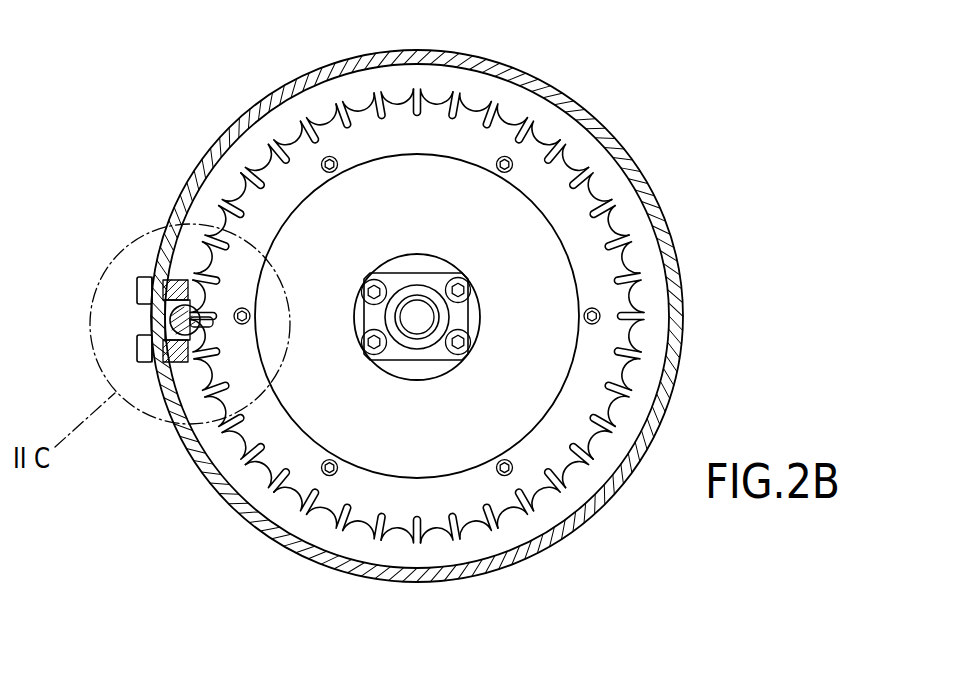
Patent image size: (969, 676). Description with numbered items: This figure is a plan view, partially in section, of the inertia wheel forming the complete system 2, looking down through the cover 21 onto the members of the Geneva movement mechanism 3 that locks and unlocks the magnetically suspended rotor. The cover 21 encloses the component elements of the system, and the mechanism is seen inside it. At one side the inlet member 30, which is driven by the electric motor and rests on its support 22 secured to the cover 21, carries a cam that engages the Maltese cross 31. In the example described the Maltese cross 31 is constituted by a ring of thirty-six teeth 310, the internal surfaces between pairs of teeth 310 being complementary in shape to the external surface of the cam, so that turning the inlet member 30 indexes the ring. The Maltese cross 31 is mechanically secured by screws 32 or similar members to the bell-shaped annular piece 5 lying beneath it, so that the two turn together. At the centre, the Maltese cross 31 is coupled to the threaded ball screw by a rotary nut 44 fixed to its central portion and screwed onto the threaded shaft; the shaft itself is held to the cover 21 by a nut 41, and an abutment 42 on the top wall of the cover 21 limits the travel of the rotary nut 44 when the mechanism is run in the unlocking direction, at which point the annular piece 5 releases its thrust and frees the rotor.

The complete system 2 is at (131, 441).
The cover 21 is at (230, 134).
The support 22 is at (150, 272).
The Geneva movement mechanism 3 is at (152, 320).
The inlet member 30 is at (150, 367).
The Maltese cross 31 is at (465, 276).
The teeth 310 is at (402, 108).
The screws 32 is at (498, 173).
The annular piece 5 is at (546, 252).
The nut 41 is at (422, 319).
The abutment 42 is at (430, 290).
The rotary nut 44 is at (411, 262).